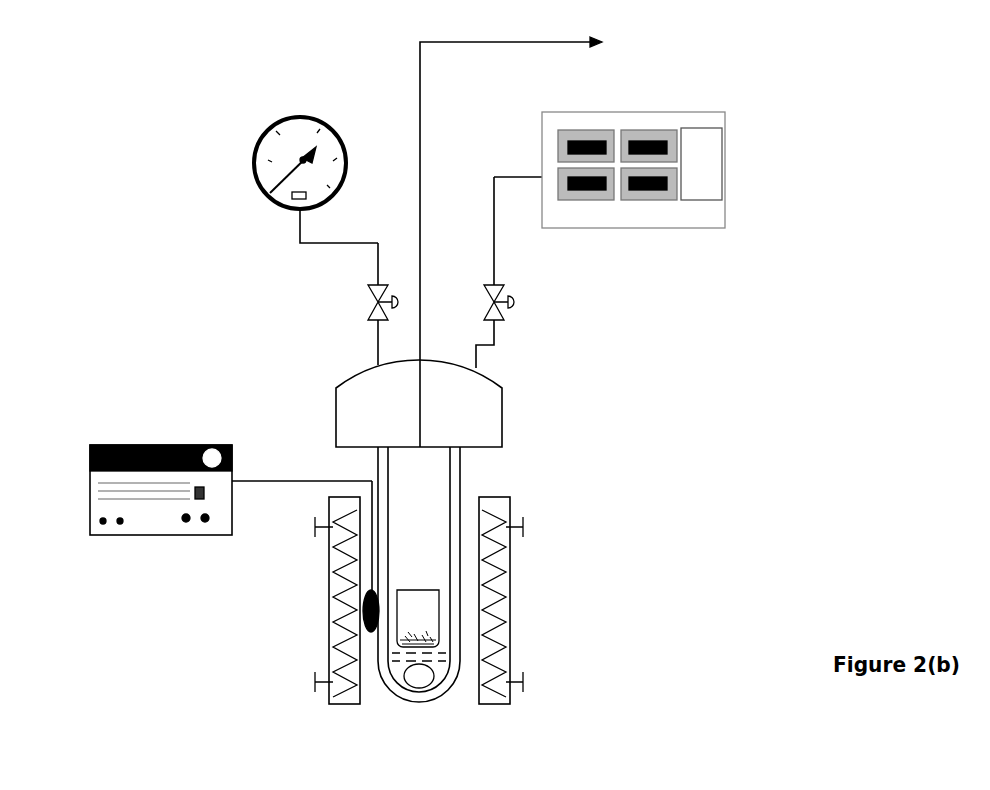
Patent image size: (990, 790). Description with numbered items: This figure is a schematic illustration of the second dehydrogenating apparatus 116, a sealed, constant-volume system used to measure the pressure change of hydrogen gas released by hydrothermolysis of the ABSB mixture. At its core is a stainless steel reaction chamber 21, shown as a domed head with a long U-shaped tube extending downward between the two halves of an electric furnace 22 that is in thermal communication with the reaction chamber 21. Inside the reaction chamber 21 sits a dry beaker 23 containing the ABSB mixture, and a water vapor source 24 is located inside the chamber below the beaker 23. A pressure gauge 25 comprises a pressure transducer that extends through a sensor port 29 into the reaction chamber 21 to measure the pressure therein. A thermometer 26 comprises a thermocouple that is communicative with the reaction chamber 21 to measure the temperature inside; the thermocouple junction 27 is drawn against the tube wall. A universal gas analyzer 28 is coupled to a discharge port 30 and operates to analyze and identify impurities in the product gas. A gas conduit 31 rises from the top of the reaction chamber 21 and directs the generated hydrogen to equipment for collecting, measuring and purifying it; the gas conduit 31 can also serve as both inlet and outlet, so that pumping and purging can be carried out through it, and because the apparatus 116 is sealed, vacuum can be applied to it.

The second dehydrogenating apparatus 116 is at (775, 290).
The gas conduit 31 is at (511, 242).
The reaction chamber 21 is at (502, 402).
The pressure gauge 25 is at (296, 180).
The sensor port 29 is at (372, 322).
The discharge port 30 is at (486, 322).
The universal gas analyzer 28 is at (609, 200).
The thermometer 26 is at (208, 490).
The thermocouple 27 is at (275, 596).
The electric furnace 22 is at (277, 666).
The dry beaker 23 is at (439, 593).
The water vapor source 24 is at (434, 676).